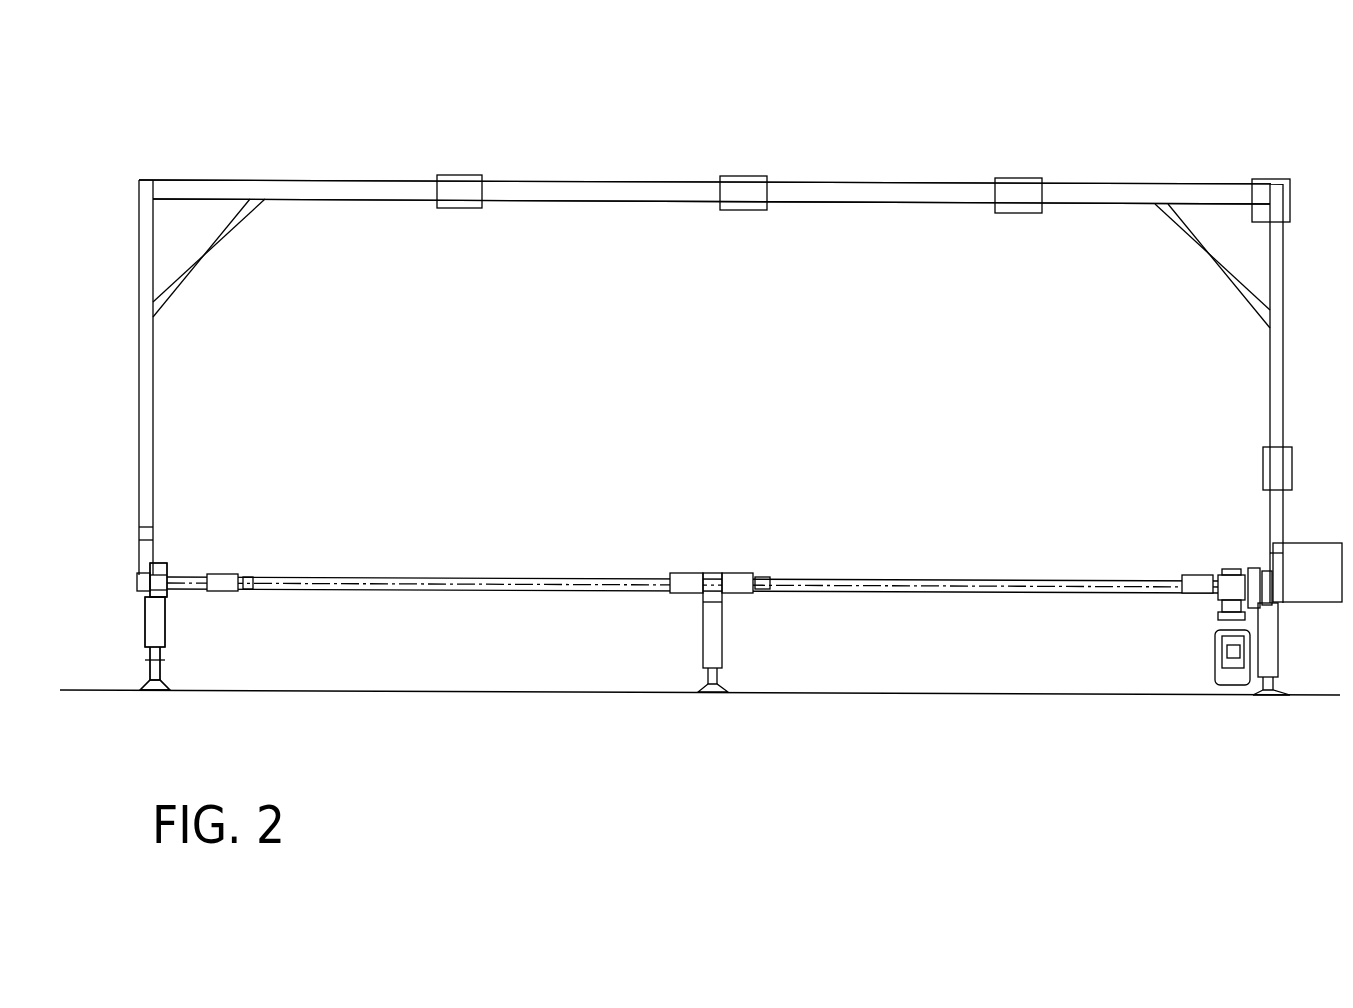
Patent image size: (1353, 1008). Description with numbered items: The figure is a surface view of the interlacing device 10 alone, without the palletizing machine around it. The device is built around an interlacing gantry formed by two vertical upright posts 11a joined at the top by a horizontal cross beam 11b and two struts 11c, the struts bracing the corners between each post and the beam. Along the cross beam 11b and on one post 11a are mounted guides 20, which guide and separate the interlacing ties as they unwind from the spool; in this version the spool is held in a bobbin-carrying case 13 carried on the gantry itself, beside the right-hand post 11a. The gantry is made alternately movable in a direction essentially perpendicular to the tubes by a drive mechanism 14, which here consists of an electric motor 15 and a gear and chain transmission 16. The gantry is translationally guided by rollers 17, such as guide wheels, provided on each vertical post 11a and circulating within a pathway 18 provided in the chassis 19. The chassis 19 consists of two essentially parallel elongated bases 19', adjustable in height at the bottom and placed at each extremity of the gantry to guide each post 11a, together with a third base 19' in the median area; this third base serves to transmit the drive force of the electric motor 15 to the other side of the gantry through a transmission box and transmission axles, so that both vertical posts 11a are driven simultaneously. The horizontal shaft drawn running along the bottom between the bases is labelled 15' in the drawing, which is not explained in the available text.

The interlacing device 10 is at (1044, 146).
The vertical upright post 11a is at (1277, 337).
The horizontal cross beam 11b is at (940, 190).
The strut 11c is at (1172, 223).
The bobbin-carrying case 13 is at (1330, 550).
The drive mechanism 14 is at (1200, 614).
The electric motor 15 is at (1178, 658).
The drive shaft 15' is at (692, 552).
The gear and chain transmission 16 is at (173, 580).
The roller 17 is at (145, 577).
The pathway 18 is at (162, 574).
The chassis 19 is at (115, 643).
The elongated base 19' is at (746, 634).
The guide 20 is at (447, 185).